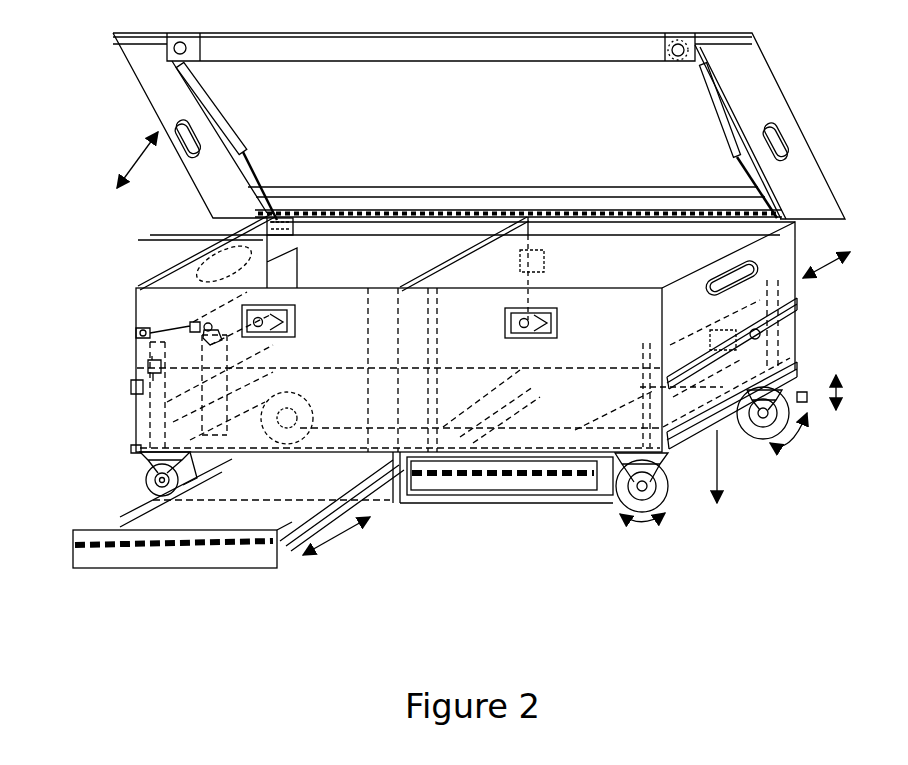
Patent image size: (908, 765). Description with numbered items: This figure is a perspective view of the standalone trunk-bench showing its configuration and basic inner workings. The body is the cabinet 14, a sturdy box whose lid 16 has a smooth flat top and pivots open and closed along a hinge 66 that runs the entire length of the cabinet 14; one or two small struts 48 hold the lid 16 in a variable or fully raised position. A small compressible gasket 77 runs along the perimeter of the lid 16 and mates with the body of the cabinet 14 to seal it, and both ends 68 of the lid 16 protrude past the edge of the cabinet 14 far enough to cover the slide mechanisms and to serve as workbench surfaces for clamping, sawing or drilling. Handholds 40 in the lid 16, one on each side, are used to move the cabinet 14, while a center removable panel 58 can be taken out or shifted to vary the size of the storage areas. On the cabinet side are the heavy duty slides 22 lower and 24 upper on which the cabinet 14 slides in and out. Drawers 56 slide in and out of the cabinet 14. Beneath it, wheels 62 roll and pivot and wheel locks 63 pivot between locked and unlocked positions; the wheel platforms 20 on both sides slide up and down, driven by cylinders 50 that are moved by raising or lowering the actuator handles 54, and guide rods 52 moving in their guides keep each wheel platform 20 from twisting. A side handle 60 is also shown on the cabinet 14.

The cabinet 14 is at (153, 307).
The lid 16 is at (147, 77).
The wheel platform 20 is at (613, 453).
The lower slide 22 is at (800, 364).
The upper slide 24 is at (800, 300).
The handhold 40 is at (780, 140).
The strut 48 is at (700, 85).
The cylinder 50 is at (146, 366).
The guide rod 52 is at (148, 406).
The actuator handle 54 is at (134, 333).
The drawer 56 is at (205, 557).
The center removable panel 58 is at (213, 242).
The side handle 60 is at (775, 247).
The wheel 62 is at (138, 482).
The wheel lock 63 is at (808, 391).
The hinge 66 is at (260, 208).
The end of lid 68 is at (763, 50).
The compressible gasket 77 is at (267, 207).